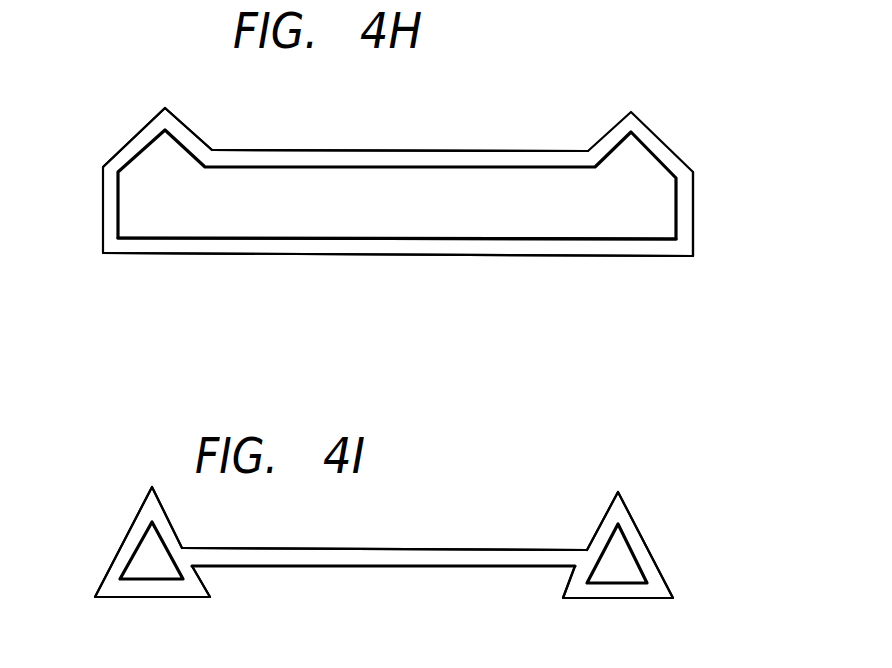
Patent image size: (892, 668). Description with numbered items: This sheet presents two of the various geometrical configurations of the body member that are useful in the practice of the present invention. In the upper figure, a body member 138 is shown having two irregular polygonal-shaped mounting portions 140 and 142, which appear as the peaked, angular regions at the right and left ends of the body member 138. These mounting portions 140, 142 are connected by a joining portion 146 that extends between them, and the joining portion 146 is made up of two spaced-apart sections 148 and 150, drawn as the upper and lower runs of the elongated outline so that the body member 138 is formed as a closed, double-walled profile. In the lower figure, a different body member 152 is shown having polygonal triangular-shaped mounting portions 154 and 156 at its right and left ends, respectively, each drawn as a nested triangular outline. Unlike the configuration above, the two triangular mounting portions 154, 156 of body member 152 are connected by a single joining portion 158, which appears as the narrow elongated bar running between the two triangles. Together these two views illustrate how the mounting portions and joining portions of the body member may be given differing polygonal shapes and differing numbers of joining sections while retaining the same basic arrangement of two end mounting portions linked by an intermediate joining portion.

In FIG. 4H, the body member 138 is at (662, 133).
In FIG. 4H, the irregular polygonal-shaped mounting portion 140 is at (693, 213).
In FIG. 4H, the irregular polygonal-shaped mounting portion 142 is at (135, 133).
In FIG. 4H, the joining portion 146 is at (323, 150).
In FIG. 4H, the spaced-apart section 148 is at (430, 150).
In FIG. 4H, the spaced-apart section 150 is at (300, 238).
In FIG. 4I, the body member 152 is at (650, 542).
In FIG. 4I, the polygonal triangular-shaped mounting portion 154 is at (602, 520).
In FIG. 4I, the polygonal triangular-shaped mounting portion 156 is at (120, 542).
In FIG. 4I, the joining portion 158 is at (342, 568).